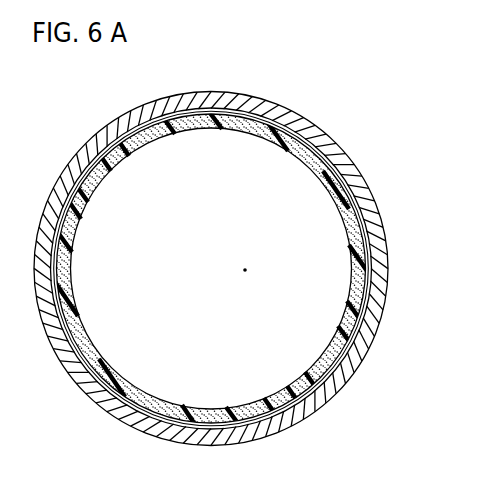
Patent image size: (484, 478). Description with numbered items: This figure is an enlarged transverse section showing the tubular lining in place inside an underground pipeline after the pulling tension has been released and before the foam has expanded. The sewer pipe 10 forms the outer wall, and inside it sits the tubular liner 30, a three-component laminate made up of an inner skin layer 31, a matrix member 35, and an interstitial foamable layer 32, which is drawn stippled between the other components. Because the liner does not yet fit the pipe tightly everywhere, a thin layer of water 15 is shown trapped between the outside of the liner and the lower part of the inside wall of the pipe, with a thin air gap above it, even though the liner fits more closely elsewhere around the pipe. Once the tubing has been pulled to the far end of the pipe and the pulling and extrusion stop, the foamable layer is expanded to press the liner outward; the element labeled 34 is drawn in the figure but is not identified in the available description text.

The sewer pipe 10 is at (270, 109).
The water 15 is at (388, 262).
The tubular liner 30 is at (333, 210).
The inner skin layer 31 is at (262, 128).
The interstitial foamable layer 32 is at (323, 173).
The intermediate layer 34 is at (334, 137).
The matrix member 35 is at (214, 121).